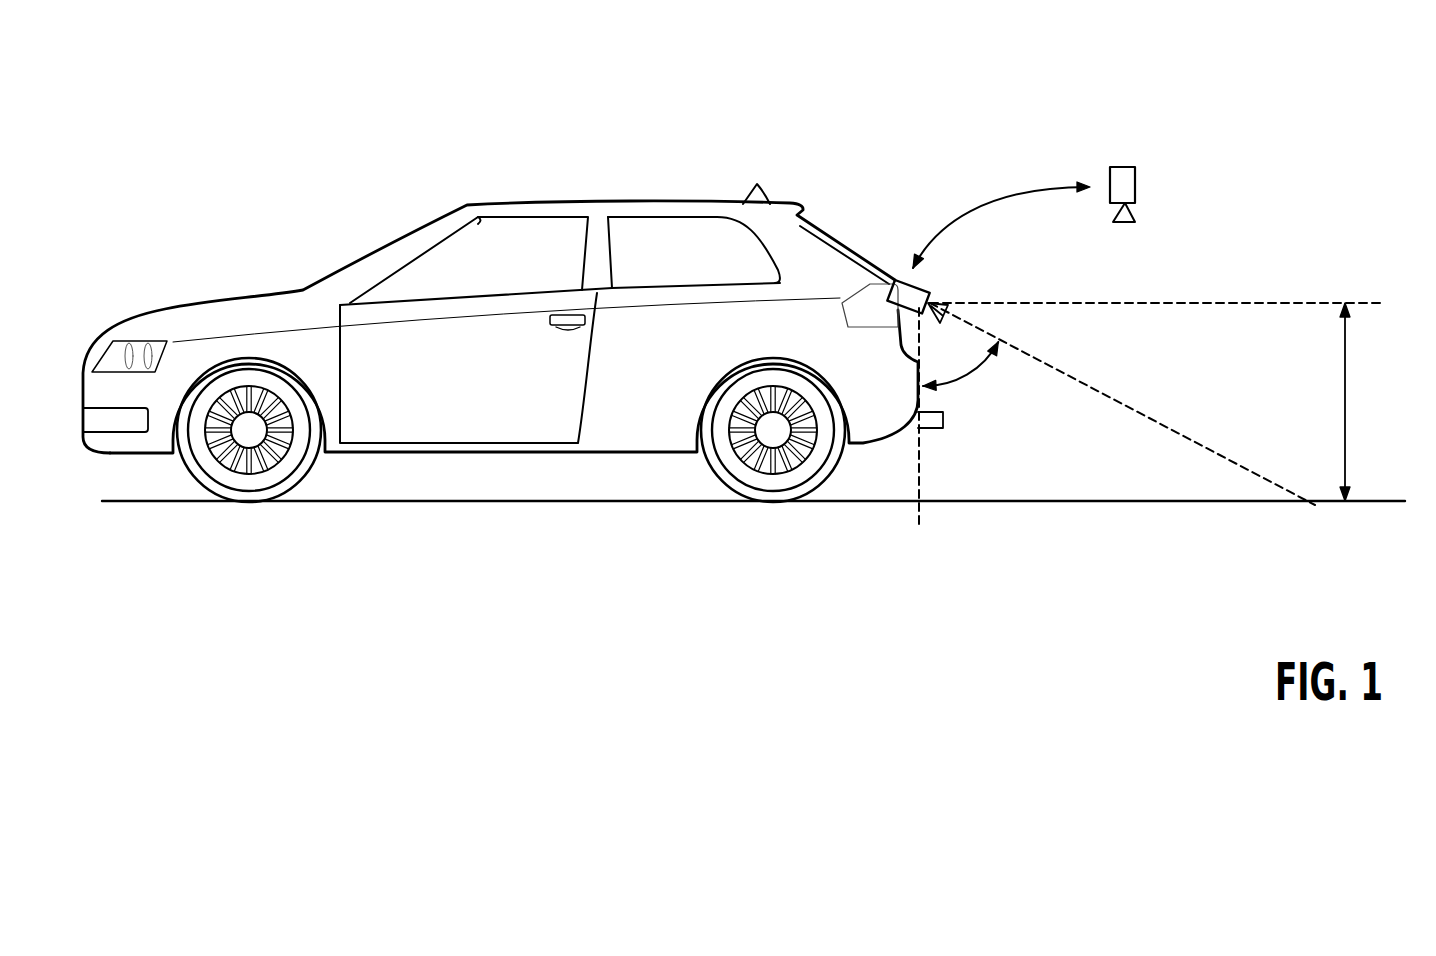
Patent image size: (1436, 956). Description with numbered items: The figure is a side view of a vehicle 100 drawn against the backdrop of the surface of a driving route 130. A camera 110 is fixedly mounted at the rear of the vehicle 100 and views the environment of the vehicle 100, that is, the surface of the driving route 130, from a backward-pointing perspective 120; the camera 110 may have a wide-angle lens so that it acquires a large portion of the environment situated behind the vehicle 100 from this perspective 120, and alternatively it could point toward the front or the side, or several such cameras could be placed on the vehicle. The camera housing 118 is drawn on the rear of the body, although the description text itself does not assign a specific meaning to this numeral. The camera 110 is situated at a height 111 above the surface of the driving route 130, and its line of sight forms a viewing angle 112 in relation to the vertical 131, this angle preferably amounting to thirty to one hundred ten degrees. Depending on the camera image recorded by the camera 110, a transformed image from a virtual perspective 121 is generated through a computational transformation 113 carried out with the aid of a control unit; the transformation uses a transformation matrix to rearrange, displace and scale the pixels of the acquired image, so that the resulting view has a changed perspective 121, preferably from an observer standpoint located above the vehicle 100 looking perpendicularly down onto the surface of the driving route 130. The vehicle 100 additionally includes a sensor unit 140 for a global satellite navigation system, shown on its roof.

The vehicle 100 is at (348, 277).
The camera 110 is at (1125, 167).
The height 111 is at (1343, 413).
The viewing angle 112 is at (972, 358).
The computational transformation 113 is at (958, 208).
The camera 118 is at (899, 276).
The backward-pointing perspective 120 is at (941, 298).
The virtual perspective 121 is at (1136, 212).
The driving route 130 is at (1380, 500).
The vertical 131 is at (921, 458).
The sensor unit 140 is at (755, 185).